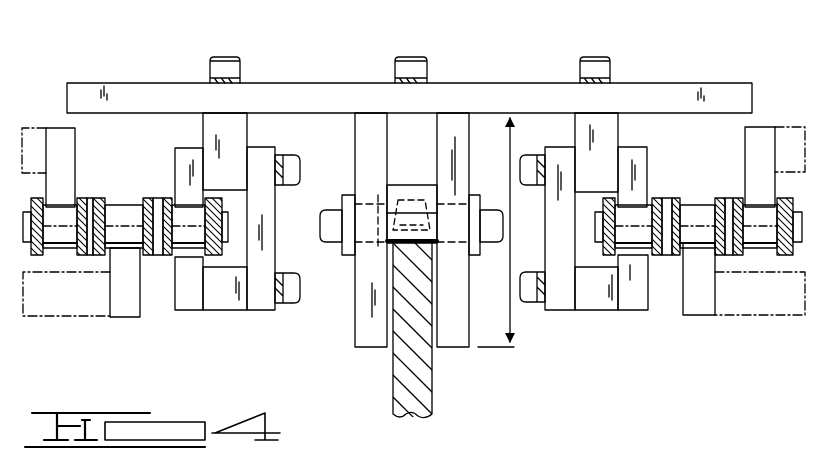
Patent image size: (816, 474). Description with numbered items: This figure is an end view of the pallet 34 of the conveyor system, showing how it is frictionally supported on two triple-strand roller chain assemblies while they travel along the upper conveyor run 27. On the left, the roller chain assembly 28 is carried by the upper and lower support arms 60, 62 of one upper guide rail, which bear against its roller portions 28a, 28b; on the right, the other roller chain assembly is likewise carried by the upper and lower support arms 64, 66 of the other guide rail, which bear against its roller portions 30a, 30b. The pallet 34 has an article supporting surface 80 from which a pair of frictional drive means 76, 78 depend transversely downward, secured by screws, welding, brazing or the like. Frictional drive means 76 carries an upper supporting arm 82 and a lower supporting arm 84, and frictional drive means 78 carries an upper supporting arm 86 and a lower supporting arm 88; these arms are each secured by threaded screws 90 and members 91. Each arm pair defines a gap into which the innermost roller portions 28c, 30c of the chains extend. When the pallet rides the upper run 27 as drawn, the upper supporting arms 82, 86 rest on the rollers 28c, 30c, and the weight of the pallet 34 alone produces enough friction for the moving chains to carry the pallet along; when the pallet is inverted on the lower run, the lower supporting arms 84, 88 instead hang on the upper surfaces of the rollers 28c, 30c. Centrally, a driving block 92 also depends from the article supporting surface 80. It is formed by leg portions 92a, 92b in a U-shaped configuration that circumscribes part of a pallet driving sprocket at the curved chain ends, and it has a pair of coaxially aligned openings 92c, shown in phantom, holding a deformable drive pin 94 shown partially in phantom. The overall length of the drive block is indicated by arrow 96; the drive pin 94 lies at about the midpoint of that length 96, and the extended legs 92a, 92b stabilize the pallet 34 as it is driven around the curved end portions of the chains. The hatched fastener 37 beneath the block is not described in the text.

The upper conveyor run 27 is at (53, 270).
The roller chain assembly 28 is at (138, 276).
The roller portion 28a is at (67, 220).
The roller portion 28b is at (128, 243).
The innermost roller portion 28c is at (182, 235).
The roller portion 30a is at (698, 266).
The roller portion 30b is at (707, 233).
The innermost roller portion 30c is at (633, 220).
The pallet 34 is at (352, 78).
The threaded bolt 37 is at (413, 425).
The upper support arm 60 is at (62, 193).
The lower support arm 62 is at (120, 263).
The upper support arm 64 is at (757, 187).
The lower support arm 66 is at (700, 277).
The frictional drive means 76 is at (279, 317).
The frictional drive means 78 is at (573, 320).
The article supporting surface 80 is at (147, 82).
The upper supporting arm 82 is at (183, 167).
The lower supporting arm 84 is at (192, 283).
The upper supporting arm 86 is at (632, 192).
The lower supporting arm 88 is at (635, 297).
The threaded screws 90 is at (288, 160).
The members 91 is at (267, 233).
The driving block 92 is at (409, 262).
The leg portion 92a is at (372, 343).
The leg portion 92b is at (455, 343).
The coaxially aligned openings 92c is at (447, 200).
The deformable drive pin 94 is at (390, 247).
The length 96 is at (513, 317).